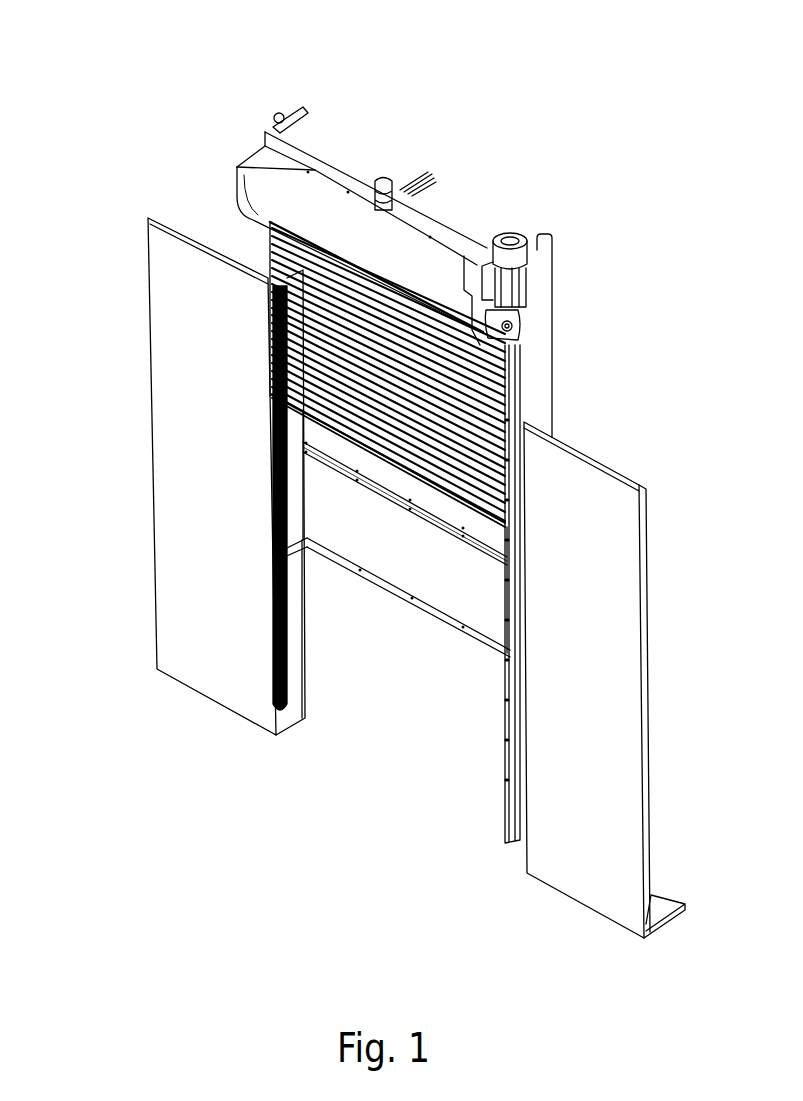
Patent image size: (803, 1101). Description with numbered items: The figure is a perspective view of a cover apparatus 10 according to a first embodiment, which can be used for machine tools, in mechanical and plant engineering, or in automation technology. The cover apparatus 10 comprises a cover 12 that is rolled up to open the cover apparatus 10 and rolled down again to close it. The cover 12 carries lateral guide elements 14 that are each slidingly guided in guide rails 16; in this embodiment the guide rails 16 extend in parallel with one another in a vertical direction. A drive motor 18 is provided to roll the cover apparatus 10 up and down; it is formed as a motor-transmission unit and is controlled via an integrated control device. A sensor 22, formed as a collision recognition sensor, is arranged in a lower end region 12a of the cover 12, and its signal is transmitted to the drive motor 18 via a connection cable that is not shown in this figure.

The cover apparatus 10 is at (592, 125).
The cover 12 is at (480, 373).
The lower end region 12a is at (455, 502).
The lateral guide elements 14 is at (263, 372).
The guide rails 16 is at (268, 493).
The drive motor 18 is at (522, 293).
The sensor 22 is at (388, 452).